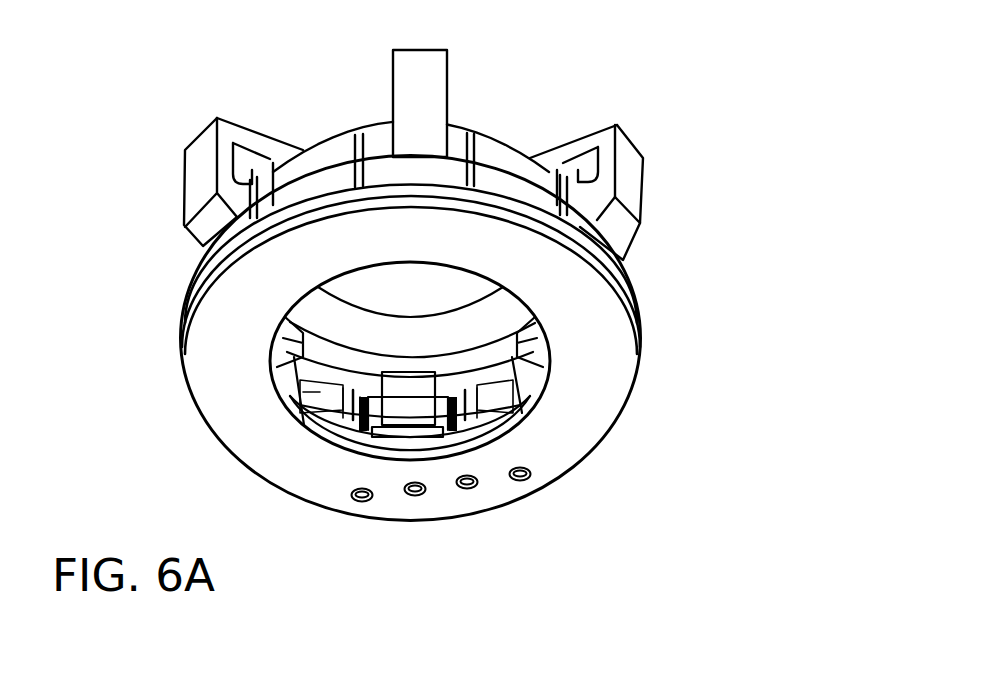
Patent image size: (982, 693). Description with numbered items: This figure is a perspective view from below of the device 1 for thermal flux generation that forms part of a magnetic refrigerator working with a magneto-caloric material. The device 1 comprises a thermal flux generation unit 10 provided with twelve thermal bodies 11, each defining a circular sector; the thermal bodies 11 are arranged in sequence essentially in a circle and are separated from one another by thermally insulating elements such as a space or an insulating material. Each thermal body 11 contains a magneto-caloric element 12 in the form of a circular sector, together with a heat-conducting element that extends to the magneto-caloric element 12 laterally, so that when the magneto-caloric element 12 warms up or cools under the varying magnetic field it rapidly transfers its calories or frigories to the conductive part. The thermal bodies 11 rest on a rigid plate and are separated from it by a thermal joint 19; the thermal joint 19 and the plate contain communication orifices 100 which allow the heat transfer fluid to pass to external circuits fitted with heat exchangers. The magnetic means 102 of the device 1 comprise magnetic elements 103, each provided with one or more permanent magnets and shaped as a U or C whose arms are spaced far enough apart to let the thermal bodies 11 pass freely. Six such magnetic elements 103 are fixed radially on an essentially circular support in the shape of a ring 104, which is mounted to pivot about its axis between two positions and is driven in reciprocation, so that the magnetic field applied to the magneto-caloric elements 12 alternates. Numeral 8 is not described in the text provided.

The device for thermal flux generation 1 is at (165, 175).
The base flange 8 is at (567, 450).
The thermal flux generation unit 10 is at (245, 103).
The thermal body 11 is at (542, 137).
The magneto-caloric element 12 is at (300, 378).
The thermal joint 19 is at (603, 263).
The communication orifices 100 is at (373, 498).
The magnetic means 102 is at (648, 175).
The magnetic element 103 is at (633, 202).
The ring 104 is at (455, 126).